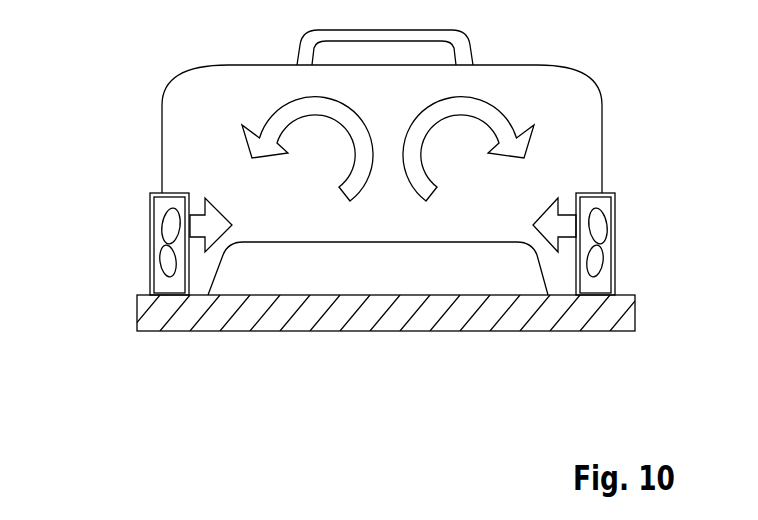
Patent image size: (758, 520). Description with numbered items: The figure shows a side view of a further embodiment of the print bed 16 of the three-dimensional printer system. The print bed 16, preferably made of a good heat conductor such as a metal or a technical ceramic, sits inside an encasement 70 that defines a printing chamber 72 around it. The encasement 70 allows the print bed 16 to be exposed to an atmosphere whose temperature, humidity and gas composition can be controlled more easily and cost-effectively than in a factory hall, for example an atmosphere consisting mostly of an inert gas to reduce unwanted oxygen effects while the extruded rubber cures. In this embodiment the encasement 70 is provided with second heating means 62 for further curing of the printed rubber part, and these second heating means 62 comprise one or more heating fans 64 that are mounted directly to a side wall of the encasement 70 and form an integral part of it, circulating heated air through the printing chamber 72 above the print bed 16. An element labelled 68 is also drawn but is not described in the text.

The print bed 16 is at (464, 320).
The second heating means 62 is at (383, 236).
The heating fan 64 is at (157, 248).
The tray 68 is at (459, 296).
The encasement 70 is at (600, 93).
The printing chamber 72 is at (533, 99).